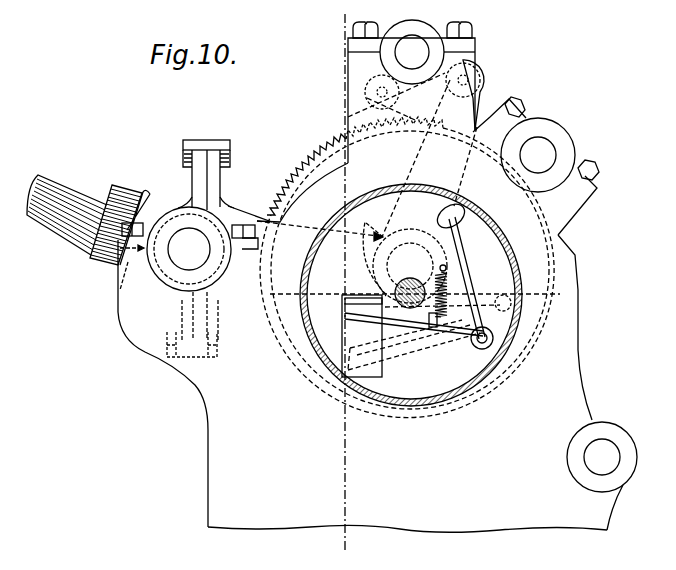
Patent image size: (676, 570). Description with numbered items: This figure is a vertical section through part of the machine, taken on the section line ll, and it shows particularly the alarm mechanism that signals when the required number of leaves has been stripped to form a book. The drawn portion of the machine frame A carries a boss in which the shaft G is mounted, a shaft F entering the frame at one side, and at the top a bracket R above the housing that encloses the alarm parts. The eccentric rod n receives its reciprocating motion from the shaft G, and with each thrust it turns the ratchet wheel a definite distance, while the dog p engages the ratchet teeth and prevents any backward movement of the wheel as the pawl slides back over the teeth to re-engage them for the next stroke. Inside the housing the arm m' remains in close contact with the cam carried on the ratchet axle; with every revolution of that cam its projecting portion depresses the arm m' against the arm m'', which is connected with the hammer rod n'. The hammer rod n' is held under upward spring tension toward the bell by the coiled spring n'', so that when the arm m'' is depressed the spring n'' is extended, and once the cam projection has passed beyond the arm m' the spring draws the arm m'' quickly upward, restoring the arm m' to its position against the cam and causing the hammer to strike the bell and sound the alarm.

The frame / housing A is at (377, 314).
The shaft F is at (84, 232).
The shaft G is at (189, 248).
The roller bracket R is at (416, 128).
The eccentric rod n is at (533, 137).
The dog p is at (350, 123).
The hammer rod n' is at (465, 238).
The coiled spring n'' is at (458, 288).
The arm m' is at (399, 322).
The arm m'' is at (399, 345).
The section line ll is at (335, 283).